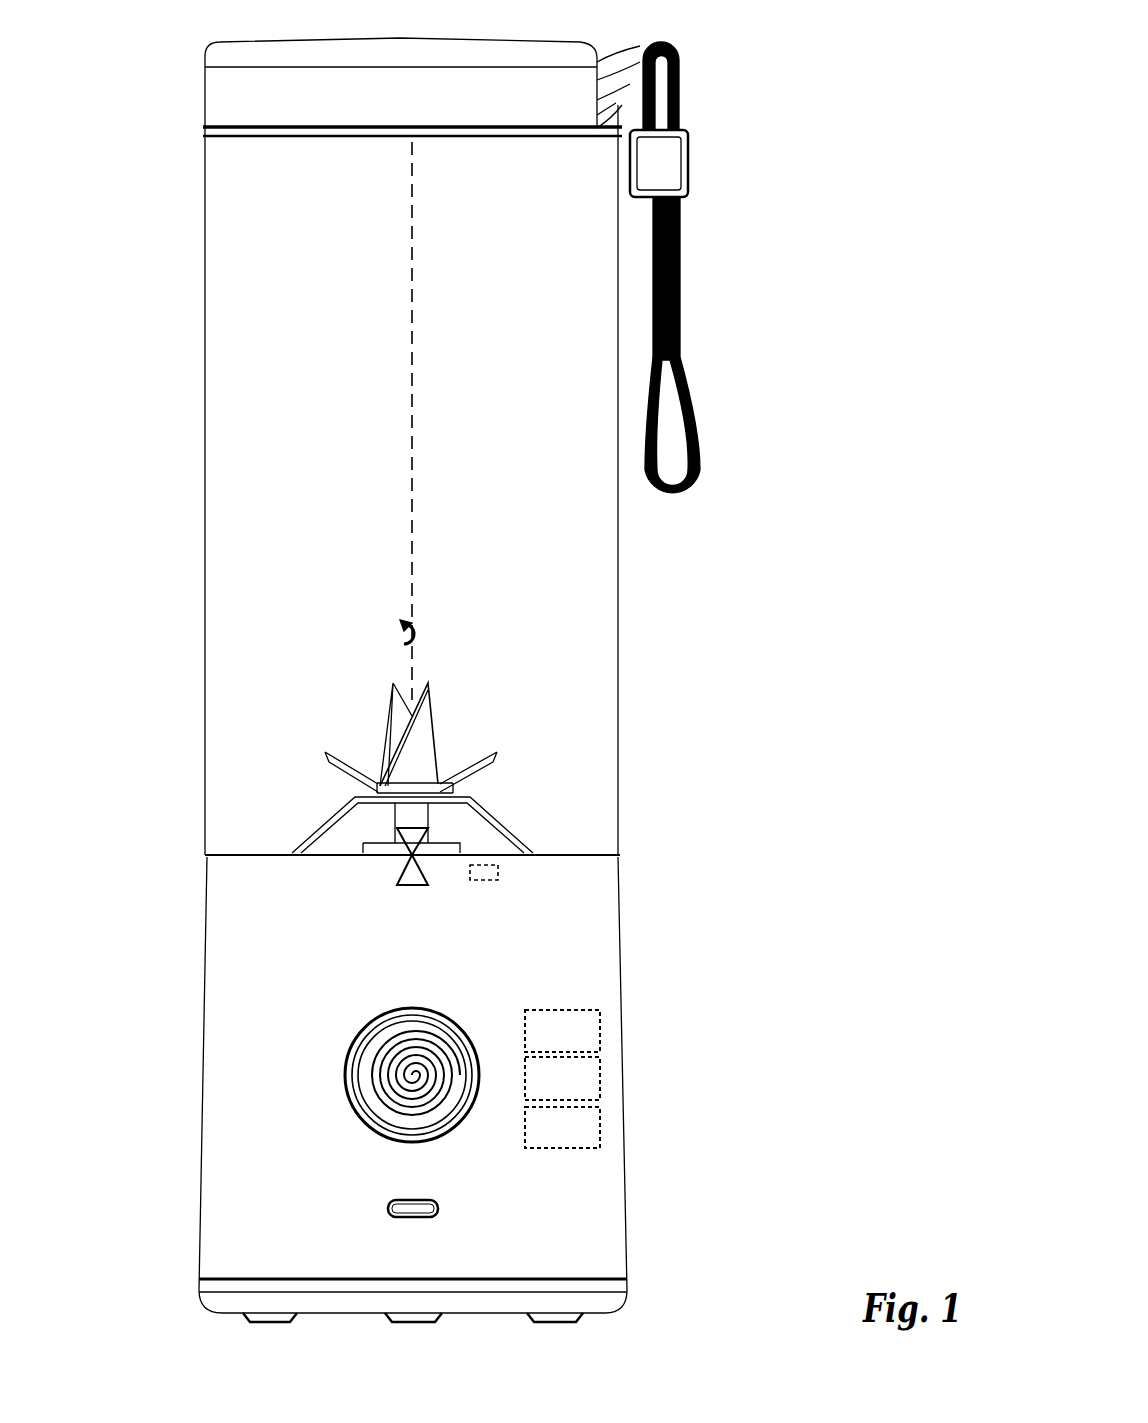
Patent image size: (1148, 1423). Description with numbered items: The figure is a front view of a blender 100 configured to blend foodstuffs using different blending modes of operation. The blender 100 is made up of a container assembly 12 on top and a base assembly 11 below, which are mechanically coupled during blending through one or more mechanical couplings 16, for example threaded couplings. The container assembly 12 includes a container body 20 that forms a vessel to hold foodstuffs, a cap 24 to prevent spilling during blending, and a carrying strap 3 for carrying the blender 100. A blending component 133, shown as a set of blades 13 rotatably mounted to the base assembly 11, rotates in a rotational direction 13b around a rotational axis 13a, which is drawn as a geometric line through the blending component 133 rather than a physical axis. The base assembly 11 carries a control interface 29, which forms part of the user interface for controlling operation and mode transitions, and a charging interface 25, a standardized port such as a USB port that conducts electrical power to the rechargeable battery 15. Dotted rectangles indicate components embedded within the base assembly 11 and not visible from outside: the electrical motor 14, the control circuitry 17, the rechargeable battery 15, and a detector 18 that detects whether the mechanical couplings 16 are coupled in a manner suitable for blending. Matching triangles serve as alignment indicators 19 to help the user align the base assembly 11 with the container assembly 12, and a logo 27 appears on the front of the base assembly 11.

The blender 100 is at (797, 72).
The container assembly 12 is at (194, 860).
The base assembly 11 is at (194, 1321).
The cap 24 is at (462, 44).
The carrying strap 3 is at (767, 494).
The container body 20 is at (573, 546).
The rotational axis 13a is at (414, 597).
The rotational direction 13b is at (426, 633).
The blending component 133 is at (500, 762).
The set of blades 13 is at (603, 739).
The mechanical couplings 16 is at (619, 860).
The detector 18 is at (498, 878).
The alignment indicators 19 is at (423, 888).
The logo 27 is at (510, 966).
The electrical motor 14 is at (600, 1024).
The control circuitry 17 is at (600, 1072).
The rechargeable battery 15 is at (600, 1120).
The control interface 29 is at (447, 1133).
The charging interface 25 is at (440, 1216).